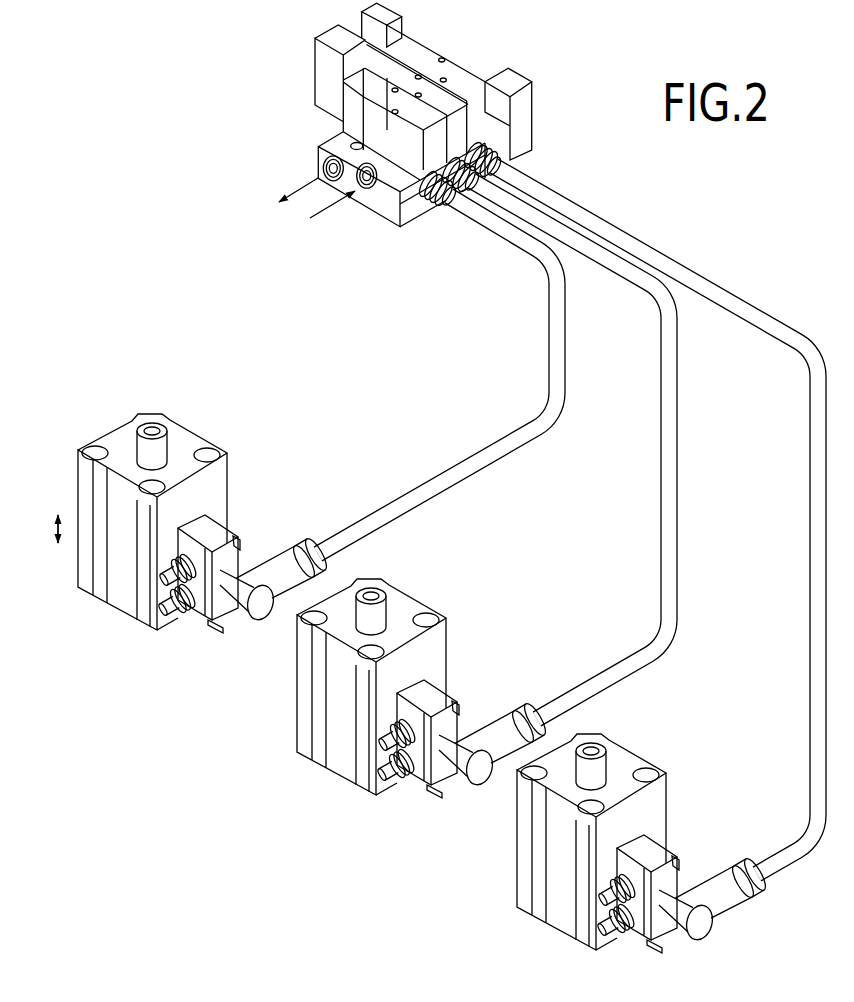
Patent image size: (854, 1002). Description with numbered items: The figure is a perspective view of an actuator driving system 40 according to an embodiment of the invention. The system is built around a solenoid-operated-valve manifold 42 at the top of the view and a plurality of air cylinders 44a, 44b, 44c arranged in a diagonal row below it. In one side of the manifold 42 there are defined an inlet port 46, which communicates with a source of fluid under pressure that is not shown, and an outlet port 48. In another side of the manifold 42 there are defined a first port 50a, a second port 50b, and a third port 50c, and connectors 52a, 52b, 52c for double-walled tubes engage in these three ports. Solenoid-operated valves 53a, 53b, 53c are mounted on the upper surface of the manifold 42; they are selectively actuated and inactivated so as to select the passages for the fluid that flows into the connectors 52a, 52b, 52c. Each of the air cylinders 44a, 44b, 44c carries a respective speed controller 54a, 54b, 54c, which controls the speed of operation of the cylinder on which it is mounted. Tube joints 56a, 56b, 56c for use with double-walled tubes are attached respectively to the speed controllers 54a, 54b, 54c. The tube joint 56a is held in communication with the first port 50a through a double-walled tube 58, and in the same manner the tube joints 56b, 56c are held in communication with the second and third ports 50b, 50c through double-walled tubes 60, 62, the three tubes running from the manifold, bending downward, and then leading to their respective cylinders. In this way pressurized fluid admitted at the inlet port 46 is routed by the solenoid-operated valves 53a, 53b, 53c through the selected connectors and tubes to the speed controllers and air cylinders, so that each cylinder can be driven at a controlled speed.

The actuator driving system 40 is at (198, 255).
The solenoid-operated-valve manifold 42 is at (327, 133).
The air cylinder 44a is at (161, 392).
The air cylinder 44b is at (398, 583).
The air cylinder 44c is at (633, 747).
The inlet port 46 is at (365, 189).
The outlet port 48 is at (317, 171).
The first port 50a is at (427, 200).
The second port 50b is at (469, 180).
The third port 50c is at (512, 147).
The connector 52a is at (441, 208).
The connector 52b is at (486, 194).
The connector 52c is at (508, 170).
The solenoid-operated valve 53a is at (327, 70).
The solenoid-operated valve 53b is at (361, 18).
The solenoid-operated valve 53c is at (523, 110).
The speed controller 54a is at (228, 517).
The speed controller 54b is at (437, 681).
The speed controller 54c is at (667, 834).
The tube joint 56a is at (253, 630).
The tube joint 56b is at (460, 790).
The tube joint 56c is at (714, 925).
The double-walled tube 58 is at (484, 474).
The double-walled tube 60 is at (684, 537).
The double-walled tube 62 is at (812, 566).